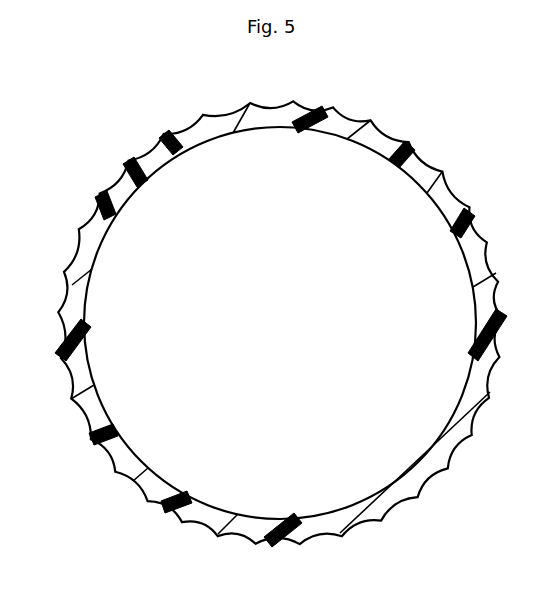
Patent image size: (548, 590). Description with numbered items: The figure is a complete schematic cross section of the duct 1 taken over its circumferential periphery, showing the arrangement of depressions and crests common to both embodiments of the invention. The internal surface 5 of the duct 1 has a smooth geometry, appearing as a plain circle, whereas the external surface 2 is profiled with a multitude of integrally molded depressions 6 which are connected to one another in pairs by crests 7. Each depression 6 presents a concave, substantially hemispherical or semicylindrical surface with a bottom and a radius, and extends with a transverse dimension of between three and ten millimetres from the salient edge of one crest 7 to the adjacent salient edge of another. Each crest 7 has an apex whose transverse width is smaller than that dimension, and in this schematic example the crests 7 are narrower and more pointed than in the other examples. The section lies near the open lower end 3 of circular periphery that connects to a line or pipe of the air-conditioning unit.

The duct 1 is at (269, 320).
The external surface 2 is at (398, 133).
The open lower end 3 is at (208, 142).
The internal surface 5 is at (327, 133).
The depression 6 is at (458, 192).
The crest 7 is at (252, 100).